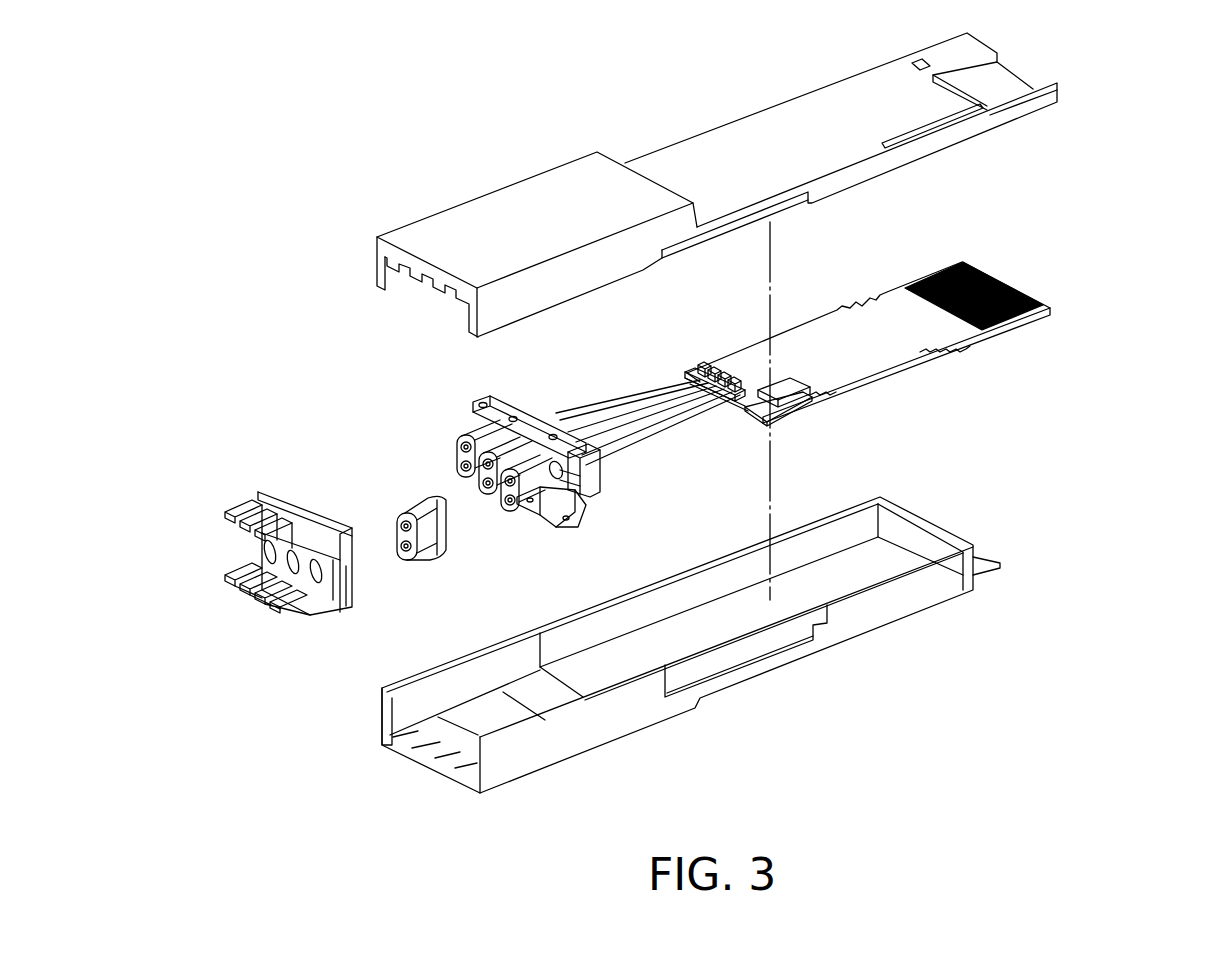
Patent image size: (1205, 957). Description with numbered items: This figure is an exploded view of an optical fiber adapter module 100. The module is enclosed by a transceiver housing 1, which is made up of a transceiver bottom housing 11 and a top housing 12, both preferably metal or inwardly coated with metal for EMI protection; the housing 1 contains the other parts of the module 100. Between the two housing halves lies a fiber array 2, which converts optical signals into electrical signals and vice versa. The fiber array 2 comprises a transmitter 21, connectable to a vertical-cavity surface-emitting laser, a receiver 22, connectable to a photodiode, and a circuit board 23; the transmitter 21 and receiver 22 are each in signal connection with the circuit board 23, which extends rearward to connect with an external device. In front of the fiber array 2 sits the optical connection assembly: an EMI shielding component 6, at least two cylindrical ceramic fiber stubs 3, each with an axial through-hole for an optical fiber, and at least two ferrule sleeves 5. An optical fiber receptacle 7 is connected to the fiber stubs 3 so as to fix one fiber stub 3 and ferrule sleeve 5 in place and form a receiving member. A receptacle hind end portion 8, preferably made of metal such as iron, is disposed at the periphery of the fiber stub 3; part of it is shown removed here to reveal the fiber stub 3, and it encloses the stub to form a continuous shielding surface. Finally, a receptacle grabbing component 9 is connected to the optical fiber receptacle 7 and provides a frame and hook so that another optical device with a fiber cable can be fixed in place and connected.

The optical fiber adapter module 100 is at (167, 85).
The transceiver housing 1 is at (1153, 309).
The transceiver bottom housing 11 is at (935, 573).
The top housing 12 is at (967, 128).
The fiber array 2 is at (737, 284).
The transmitter 21 is at (720, 363).
The receiver 22 is at (780, 390).
The circuit board 23 is at (868, 330).
The fiber stub 3 is at (582, 482).
The ferrule sleeve 5 is at (533, 498).
The EMI shielding component 6 is at (502, 403).
The optical fiber receptacle 7 is at (417, 512).
The receptacle hind end portion 8 is at (590, 462).
The receptacle grabbing component 9 is at (272, 492).